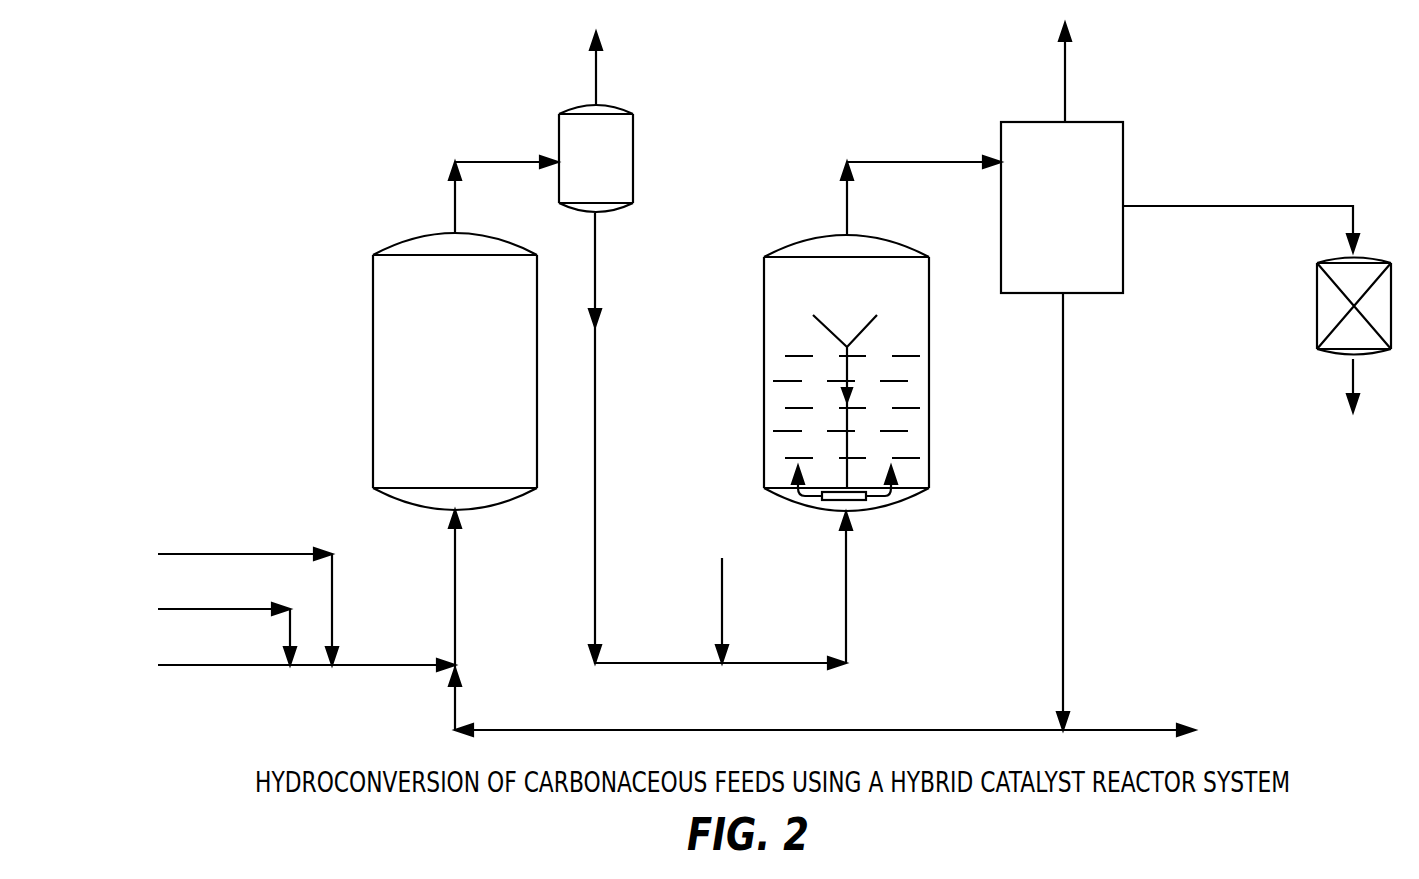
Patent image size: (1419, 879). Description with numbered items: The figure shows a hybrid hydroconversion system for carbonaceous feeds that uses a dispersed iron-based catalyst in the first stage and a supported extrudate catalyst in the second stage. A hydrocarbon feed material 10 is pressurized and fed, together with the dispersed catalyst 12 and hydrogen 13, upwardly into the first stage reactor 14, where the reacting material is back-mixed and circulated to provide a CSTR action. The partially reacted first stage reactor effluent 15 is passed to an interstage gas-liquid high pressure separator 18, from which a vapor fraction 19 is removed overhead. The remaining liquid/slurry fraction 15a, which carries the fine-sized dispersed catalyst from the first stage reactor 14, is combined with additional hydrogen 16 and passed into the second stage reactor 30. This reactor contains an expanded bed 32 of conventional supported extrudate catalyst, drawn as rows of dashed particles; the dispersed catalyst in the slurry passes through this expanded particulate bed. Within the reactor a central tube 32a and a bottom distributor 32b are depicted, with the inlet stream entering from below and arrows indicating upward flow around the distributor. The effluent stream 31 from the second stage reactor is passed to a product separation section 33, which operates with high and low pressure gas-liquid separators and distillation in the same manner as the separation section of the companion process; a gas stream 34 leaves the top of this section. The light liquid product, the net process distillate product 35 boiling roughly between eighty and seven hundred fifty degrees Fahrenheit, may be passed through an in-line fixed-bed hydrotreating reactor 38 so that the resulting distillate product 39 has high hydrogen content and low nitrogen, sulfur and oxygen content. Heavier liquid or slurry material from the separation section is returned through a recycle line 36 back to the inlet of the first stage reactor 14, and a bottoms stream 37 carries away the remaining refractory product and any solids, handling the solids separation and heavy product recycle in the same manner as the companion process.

The hydrocarbon feed material 10 is at (247, 665).
The catalyst 12 is at (291, 623).
The hydrogen 13 is at (333, 600).
The first stage reactor 14 is at (455, 481).
The first stage reactor effluent 15 is at (495, 158).
The liquid/slurry fraction 15a is at (595, 373).
The hydrogen 16 is at (723, 615).
The interstage gas-liquid high pressure separator 18 is at (633, 163).
The vapor fraction 19 is at (597, 77).
The second stage reactor 30 is at (812, 244).
The effluent stream 31 is at (943, 160).
The expanded bed 32 is at (903, 391).
The central distributor tube 32a is at (847, 419).
The bottom distributor 32b is at (855, 500).
The product separation section 33 is at (1062, 207).
The gas outlet line 34 is at (1066, 90).
The net process distillate product 35 is at (1258, 205).
The recycle line 36 is at (1063, 562).
The bottoms product line 37 is at (1145, 730).
The in-line fixed-bed hydrotreating reactor 38 is at (1317, 326).
The filter outlet line 39 is at (1353, 375).